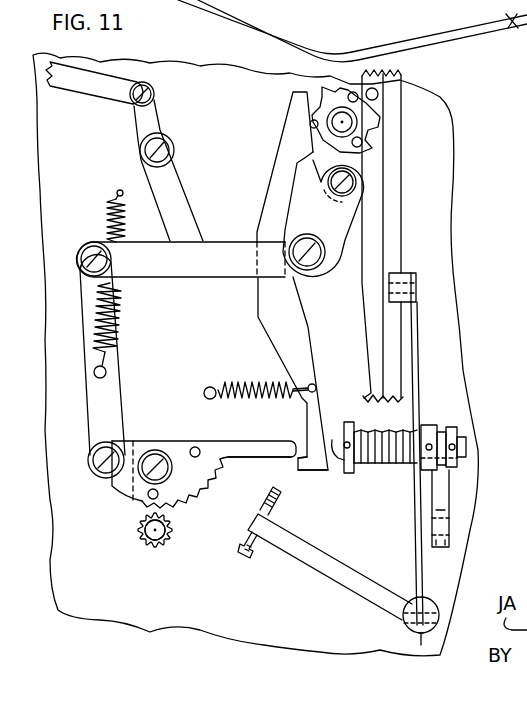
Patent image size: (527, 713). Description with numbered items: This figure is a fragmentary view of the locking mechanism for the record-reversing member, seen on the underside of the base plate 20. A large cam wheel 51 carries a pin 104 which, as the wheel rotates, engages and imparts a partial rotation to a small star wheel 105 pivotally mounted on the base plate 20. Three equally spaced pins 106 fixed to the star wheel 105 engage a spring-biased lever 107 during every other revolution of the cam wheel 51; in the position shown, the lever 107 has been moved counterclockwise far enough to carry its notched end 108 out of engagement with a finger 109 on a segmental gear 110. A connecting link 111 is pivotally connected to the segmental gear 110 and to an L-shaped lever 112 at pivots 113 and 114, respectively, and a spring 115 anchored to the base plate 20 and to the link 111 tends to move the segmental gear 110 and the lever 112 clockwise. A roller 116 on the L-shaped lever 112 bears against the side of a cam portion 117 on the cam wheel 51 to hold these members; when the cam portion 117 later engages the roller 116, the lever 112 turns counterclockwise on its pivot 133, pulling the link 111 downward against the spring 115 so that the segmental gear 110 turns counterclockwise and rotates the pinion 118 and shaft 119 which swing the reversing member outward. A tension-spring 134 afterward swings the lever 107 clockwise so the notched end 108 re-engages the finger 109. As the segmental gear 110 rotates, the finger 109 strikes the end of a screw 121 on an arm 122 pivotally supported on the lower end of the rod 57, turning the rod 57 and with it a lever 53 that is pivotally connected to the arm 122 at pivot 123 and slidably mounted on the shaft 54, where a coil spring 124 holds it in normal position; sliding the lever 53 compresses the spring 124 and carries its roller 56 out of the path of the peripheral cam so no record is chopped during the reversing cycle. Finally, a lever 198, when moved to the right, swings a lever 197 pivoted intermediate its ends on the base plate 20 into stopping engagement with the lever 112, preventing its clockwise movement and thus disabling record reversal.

The base plate 20 is at (50, 190).
The cam wheel 51 is at (393, 180).
The lever 53 is at (419, 490).
The shaft 54 is at (467, 443).
The roller 56 is at (403, 272).
The rod 57 is at (431, 633).
The pin 104 is at (376, 95).
The star wheel 105 is at (332, 106).
The pins 106 is at (310, 124).
The spring-biased lever 107 is at (278, 182).
The notched end 108 is at (307, 470).
The finger 109 is at (277, 447).
The segmental gear 110 is at (217, 462).
The connecting link 111 is at (110, 392).
The L-shaped lever 112 is at (205, 270).
The pivot 113 is at (93, 465).
The pivot 114 is at (82, 262).
The spring 115 is at (107, 215).
The roller 116 is at (356, 193).
The cam portion 117 is at (364, 333).
The pinion 118 is at (167, 537).
The shaft 119 is at (142, 533).
The screw 121 is at (284, 507).
The arm 122 is at (341, 575).
The pivot 123 is at (404, 623).
The coil spring 124 is at (392, 457).
The pivot 133 is at (312, 275).
The tension-spring 134 is at (260, 383).
The lever 197 is at (180, 182).
The lever 198 is at (115, 92).